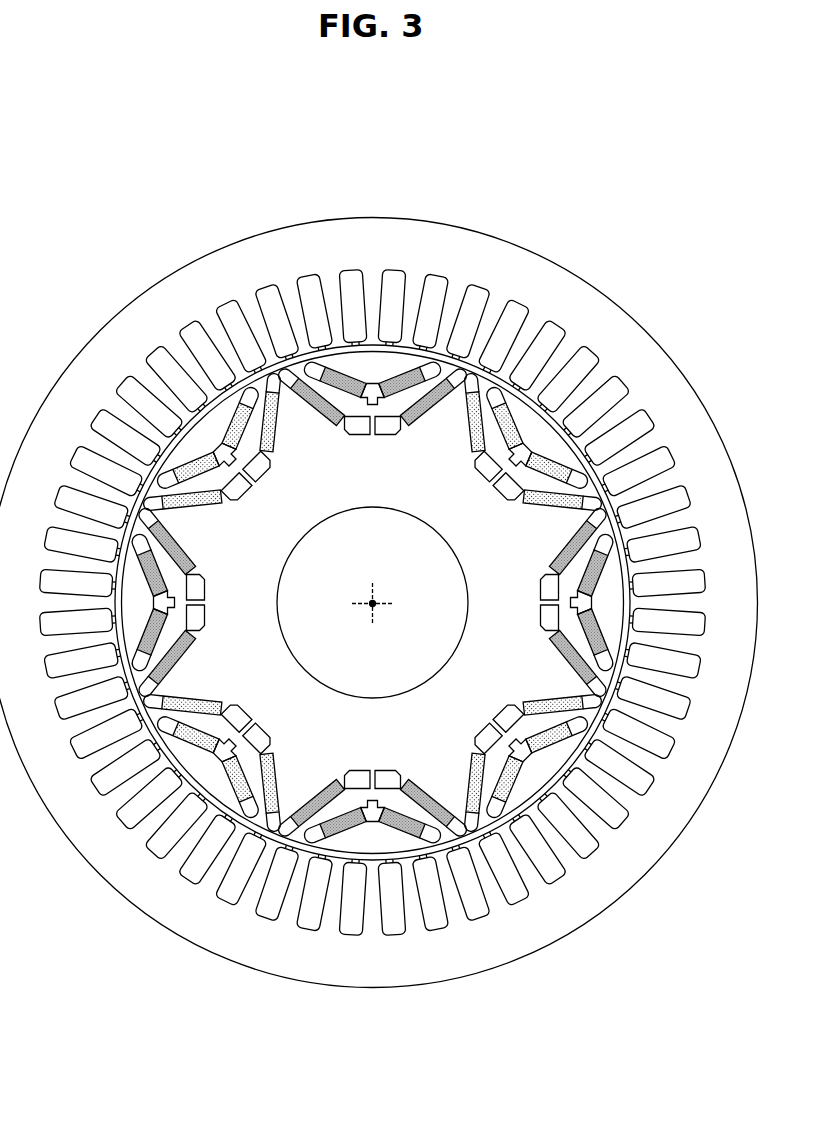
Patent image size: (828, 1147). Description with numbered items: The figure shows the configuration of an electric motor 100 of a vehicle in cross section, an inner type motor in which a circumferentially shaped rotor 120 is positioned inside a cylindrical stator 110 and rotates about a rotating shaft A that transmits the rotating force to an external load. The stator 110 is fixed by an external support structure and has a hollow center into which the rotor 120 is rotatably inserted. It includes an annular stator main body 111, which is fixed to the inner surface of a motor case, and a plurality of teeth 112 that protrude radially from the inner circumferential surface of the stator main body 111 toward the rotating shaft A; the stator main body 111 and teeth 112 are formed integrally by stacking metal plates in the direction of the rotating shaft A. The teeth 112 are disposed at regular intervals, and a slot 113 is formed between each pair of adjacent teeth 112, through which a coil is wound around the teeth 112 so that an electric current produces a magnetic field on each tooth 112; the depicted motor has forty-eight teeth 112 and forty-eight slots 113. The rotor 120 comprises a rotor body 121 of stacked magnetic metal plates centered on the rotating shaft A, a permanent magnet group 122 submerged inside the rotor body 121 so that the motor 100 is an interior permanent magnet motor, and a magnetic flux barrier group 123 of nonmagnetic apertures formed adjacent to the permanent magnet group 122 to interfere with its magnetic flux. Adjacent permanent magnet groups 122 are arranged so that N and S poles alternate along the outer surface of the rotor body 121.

The electric motor 100 is at (107, 222).
The stator 110 is at (457, 167).
The stator main body 111 is at (355, 228).
The teeth 112 is at (413, 292).
The slot 113 is at (438, 287).
The rotor 120 is at (293, 1037).
The rotor body 121 is at (302, 770).
The permanent magnet group 122 is at (246, 808).
The magnetic flux barrier group 123 is at (162, 727).
The rotating shaft A is at (375, 607).